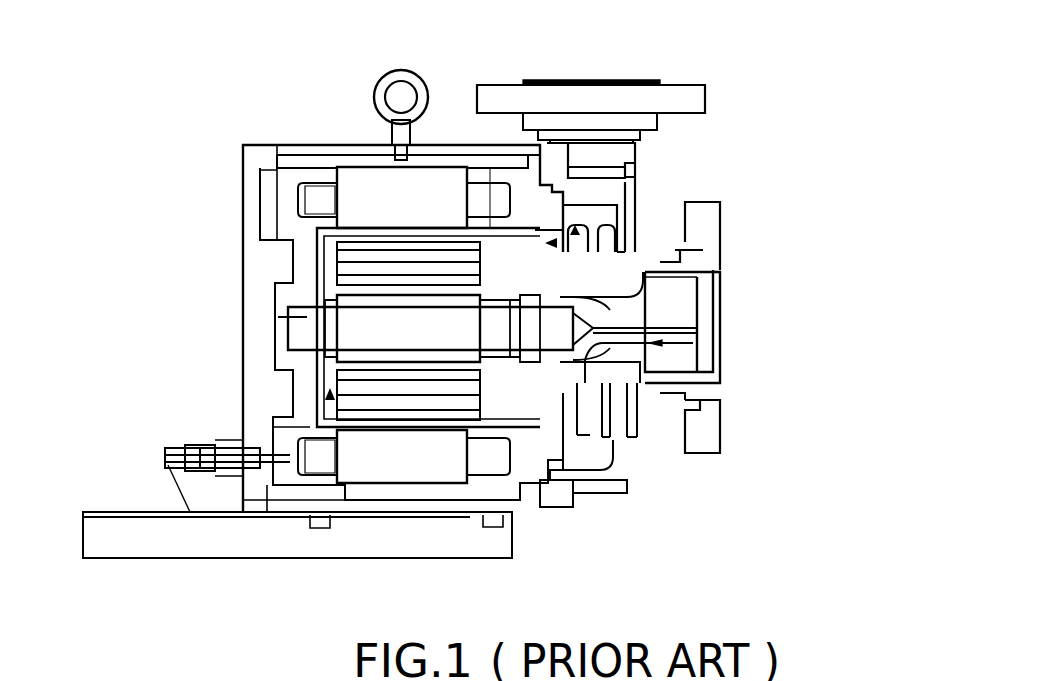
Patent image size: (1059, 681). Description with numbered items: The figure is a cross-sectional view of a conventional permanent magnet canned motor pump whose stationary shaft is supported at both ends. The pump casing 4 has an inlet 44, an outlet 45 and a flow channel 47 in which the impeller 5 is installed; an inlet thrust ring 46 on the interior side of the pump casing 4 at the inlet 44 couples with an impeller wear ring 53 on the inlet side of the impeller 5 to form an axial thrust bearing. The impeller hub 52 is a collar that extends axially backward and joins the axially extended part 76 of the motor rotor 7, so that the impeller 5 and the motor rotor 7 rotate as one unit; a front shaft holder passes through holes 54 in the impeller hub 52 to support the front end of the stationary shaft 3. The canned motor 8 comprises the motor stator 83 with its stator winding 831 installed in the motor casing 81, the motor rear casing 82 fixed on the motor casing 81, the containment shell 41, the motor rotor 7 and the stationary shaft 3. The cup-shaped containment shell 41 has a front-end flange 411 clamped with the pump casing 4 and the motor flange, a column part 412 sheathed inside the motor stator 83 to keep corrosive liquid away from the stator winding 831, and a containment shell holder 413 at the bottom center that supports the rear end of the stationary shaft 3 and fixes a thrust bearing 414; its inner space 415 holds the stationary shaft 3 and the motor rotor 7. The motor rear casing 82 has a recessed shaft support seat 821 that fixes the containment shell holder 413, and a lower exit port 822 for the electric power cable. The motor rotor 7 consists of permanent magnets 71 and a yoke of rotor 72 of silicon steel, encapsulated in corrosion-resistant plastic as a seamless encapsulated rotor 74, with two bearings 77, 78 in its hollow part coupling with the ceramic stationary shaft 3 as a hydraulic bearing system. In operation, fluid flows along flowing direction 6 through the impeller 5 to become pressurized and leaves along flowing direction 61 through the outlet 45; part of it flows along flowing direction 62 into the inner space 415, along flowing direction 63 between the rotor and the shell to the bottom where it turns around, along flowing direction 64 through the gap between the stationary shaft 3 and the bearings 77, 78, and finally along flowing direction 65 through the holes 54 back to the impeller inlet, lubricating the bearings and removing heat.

The stationary shaft 3 is at (303, 327).
The pump casing 4 is at (560, 410).
The containment shell 41 is at (315, 243).
The front-end flange 411 is at (540, 505).
The column part 412 is at (397, 430).
The containment shell holder 413 is at (300, 300).
The thrust bearing 414 is at (300, 370).
The inner space 415 is at (550, 380).
The inlet 44 is at (727, 328).
The outlet 45 is at (560, 85).
The inlet thrust ring 46 is at (703, 243).
The flow channel 47 is at (600, 217).
The impeller 5 is at (625, 425).
The impeller hub 52 is at (633, 387).
The impeller wear ring 53 is at (663, 393).
The hole 54 is at (650, 390).
The flowing direction 6 is at (643, 343).
The flowing direction 61 is at (578, 218).
The flowing direction 62 is at (587, 212).
The flowing direction 63 is at (310, 407).
The flowing direction 64 is at (433, 300).
The flowing direction 65 is at (598, 312).
The motor rotor 7 is at (330, 273).
The permanent magnets 71 is at (370, 253).
The yoke of rotor 72 is at (399, 273).
The encapsulated rotor 74 is at (492, 283).
The axially extended part 76 is at (627, 443).
The bearing 77 is at (388, 355).
The bearing 78 is at (507, 353).
The canned motor 8 is at (318, 145).
The motor casing 81 is at (293, 165).
The motor rear casing 82 is at (257, 155).
The recessed shaft support seat 821 is at (267, 343).
The exit port of electric power cable 822 is at (170, 458).
The motor stator 83 is at (433, 197).
The stator winding 831 is at (302, 197).